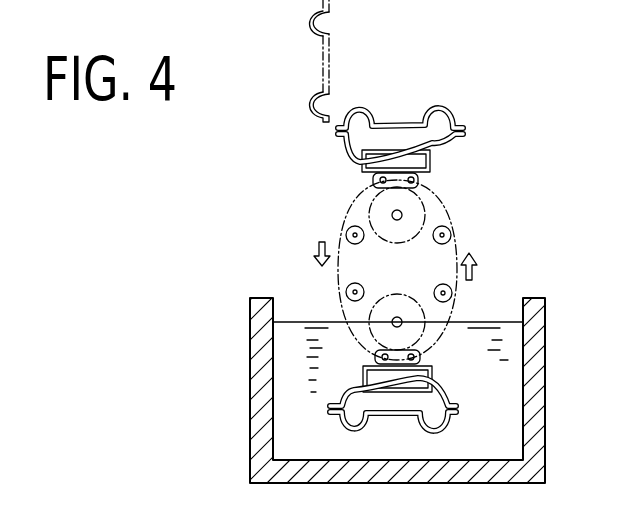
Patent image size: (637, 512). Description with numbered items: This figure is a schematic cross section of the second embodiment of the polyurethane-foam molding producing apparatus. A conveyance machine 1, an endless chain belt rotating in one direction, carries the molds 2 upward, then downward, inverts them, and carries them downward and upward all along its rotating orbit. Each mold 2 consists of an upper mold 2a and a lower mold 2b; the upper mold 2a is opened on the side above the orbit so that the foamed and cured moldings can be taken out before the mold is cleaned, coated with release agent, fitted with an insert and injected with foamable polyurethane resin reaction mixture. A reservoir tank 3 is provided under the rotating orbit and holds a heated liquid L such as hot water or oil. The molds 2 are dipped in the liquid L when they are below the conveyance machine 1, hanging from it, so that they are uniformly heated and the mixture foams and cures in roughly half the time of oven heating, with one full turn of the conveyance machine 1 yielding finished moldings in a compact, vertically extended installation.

The conveyance machine 1 is at (465, 217).
The mold 2 is at (387, 225).
The upper mold 2a is at (322, 67).
The lower mold 2b is at (348, 151).
The reservoir tank 3 is at (241, 342).
The heated liquid L is at (473, 356).